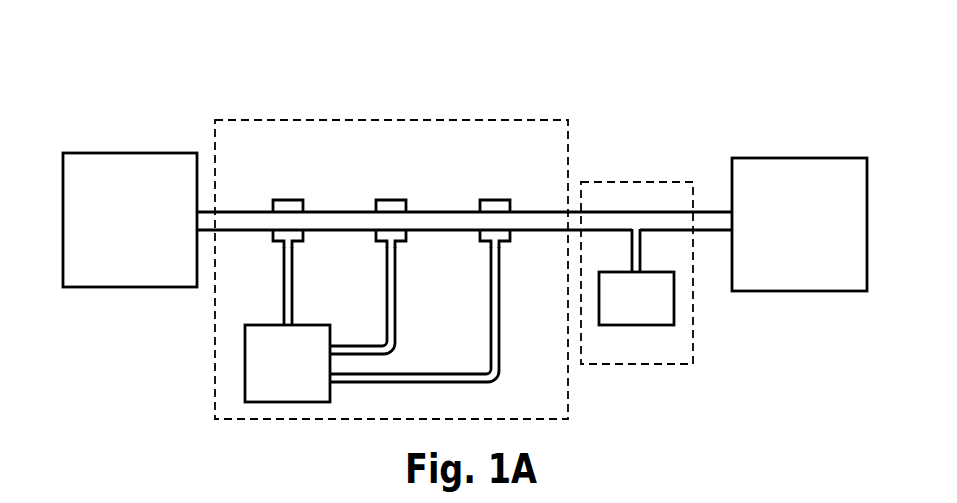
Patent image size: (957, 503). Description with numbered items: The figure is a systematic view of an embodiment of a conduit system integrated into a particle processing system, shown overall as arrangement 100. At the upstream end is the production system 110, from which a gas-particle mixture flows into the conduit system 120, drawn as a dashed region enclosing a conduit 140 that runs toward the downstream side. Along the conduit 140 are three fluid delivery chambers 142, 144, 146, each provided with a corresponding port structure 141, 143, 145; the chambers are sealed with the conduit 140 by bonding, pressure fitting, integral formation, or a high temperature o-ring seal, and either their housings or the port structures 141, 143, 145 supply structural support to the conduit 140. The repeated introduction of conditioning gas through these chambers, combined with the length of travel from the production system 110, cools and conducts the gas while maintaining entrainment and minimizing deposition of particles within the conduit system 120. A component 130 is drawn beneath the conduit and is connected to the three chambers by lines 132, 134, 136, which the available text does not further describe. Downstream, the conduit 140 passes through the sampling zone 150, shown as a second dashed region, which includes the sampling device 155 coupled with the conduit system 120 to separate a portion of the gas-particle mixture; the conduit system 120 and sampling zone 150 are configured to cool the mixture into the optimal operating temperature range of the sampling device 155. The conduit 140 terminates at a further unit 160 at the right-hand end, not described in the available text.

The system 100 is at (195, 86).
The production system 110 is at (130, 220).
The conduit system 120 is at (501, 120).
The controller 130 is at (287, 363).
The first signal line 132 is at (295, 283).
The second signal line 134 is at (400, 283).
The third signal line 136 is at (503, 283).
The conduit 140 is at (247, 231).
The port structure 141 is at (290, 206).
The fluid delivery chamber 142 is at (287, 206).
The port structure 143 is at (395, 207).
The fluid delivery chamber 144 is at (392, 207).
The port structure 145 is at (500, 207).
The fluid delivery chamber 146 is at (498, 207).
The sampling zone 150 is at (628, 182).
The sampling device 155 is at (636, 277).
The peripheral device 160 is at (799, 224).